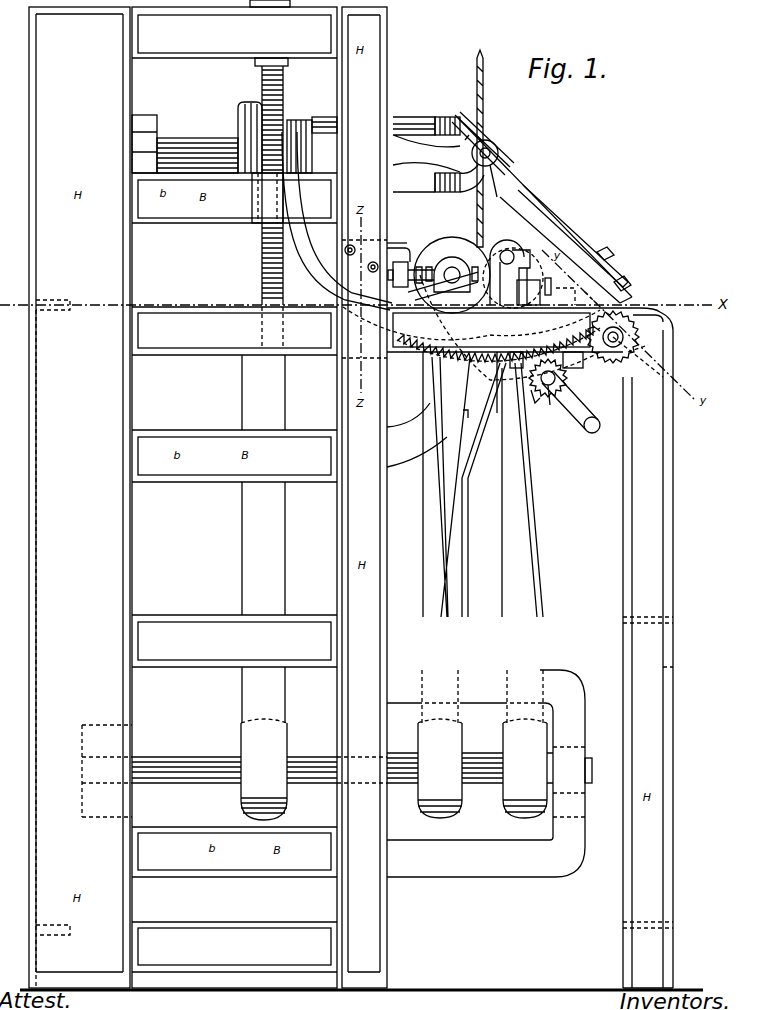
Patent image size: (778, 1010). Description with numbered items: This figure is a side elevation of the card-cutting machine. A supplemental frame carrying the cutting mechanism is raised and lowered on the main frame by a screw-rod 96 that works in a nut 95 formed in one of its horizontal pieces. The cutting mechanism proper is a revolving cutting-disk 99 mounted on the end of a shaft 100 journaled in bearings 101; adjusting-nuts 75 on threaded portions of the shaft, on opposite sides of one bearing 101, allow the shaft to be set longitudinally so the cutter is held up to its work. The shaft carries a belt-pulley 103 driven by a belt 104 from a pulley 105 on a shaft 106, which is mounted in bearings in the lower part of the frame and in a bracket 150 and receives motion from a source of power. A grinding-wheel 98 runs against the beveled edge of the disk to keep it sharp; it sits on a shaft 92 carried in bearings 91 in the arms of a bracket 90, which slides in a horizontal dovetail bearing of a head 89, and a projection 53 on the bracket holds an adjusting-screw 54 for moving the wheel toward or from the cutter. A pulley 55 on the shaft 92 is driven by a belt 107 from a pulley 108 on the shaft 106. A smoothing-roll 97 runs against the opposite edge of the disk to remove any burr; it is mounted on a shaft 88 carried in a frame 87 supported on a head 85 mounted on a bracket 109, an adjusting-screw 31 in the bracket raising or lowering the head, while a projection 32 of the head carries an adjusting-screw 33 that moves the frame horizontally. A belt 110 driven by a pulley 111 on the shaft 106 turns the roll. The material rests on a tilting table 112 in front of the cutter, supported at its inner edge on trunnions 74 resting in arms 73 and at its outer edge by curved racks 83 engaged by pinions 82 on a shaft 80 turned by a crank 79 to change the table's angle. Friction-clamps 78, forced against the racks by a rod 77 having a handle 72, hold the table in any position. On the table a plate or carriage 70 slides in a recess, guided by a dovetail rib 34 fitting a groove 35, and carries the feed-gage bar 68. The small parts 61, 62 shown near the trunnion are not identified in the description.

The adjusting-screw 31 is at (487, 418).
The projection 32 is at (548, 290).
The adjusting-screw 33 is at (565, 296).
The dovetail rib 34 is at (630, 286).
The groove 35 is at (588, 298).
The projection 53 is at (398, 269).
The adjusting-screw 54 is at (420, 270).
The pulley 55 is at (452, 257).
The rod 61 is at (490, 139).
The rod 62 is at (508, 178).
The bar 68 is at (610, 258).
The plate or carriage 70 is at (533, 210).
The handle 72 is at (596, 362).
The arms 73 is at (438, 170).
The trunnions 74 is at (494, 151).
The adjusting-nuts 75 is at (299, 121).
The rod 77 is at (624, 337).
The friction-clamps 78 is at (638, 357).
The crank 79 is at (571, 402).
The shaft 80 is at (549, 404).
The pinions 82 is at (533, 404).
The curved racks 83 is at (322, 282).
The head 85 is at (523, 318).
The frame 87 is at (528, 288).
The shaft 88 is at (512, 252).
The head 89 is at (394, 247).
The bracket 90 is at (398, 240).
The bearings 91 is at (443, 290).
The shaft 92 is at (457, 270).
The nut 95 is at (252, 197).
The screw-rod 96 is at (284, 84).
The smoothing or polishing roll 97 is at (500, 243).
The grinding-wheel 98 is at (445, 240).
The cutting-disk 99 is at (484, 55).
The shaft 100 is at (197, 150).
The bearings 101 is at (148, 120).
The belt-pulley 103 is at (238, 117).
The belt 104 is at (263, 539).
The pulley 105 is at (287, 746).
The shaft 106 is at (200, 757).
The belt 107 is at (428, 550).
The pulley 108 is at (462, 740).
The bracket 109 is at (417, 435).
The belt 110 is at (515, 578).
The pulley 111 is at (547, 736).
The tilting table 112 is at (520, 192).
The bracket 150 is at (582, 695).